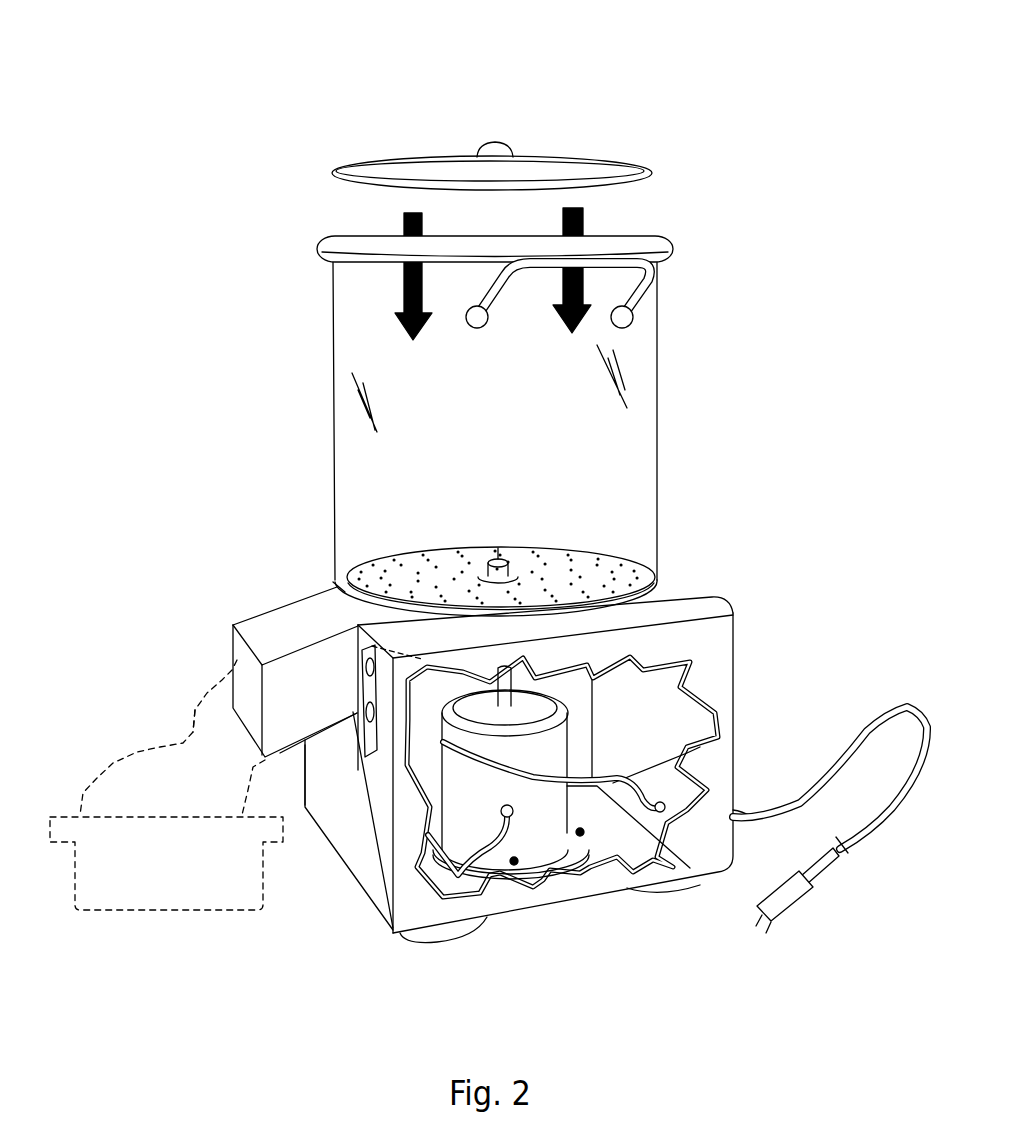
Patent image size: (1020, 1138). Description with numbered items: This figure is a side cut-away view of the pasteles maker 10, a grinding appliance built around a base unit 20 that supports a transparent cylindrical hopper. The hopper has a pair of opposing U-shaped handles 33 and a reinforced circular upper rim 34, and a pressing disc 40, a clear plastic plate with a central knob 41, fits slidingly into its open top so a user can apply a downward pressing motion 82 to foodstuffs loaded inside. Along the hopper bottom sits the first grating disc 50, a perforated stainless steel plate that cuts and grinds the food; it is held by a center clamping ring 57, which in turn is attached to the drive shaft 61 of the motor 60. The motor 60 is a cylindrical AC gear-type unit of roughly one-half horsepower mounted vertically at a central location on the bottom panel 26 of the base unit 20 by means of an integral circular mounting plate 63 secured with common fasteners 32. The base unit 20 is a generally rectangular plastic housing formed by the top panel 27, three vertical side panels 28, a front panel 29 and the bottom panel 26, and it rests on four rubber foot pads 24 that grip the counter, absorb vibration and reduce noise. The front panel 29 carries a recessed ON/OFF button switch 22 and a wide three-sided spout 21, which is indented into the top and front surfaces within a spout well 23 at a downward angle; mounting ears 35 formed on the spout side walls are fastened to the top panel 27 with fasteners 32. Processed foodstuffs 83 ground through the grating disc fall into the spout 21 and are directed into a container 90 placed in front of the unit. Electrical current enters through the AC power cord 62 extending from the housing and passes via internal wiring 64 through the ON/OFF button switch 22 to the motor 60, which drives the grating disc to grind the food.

The pasteles maker 10 is at (852, 143).
The base unit 20 is at (748, 638).
The spout 21 is at (263, 692).
The ON/OFF button switch 22 is at (355, 713).
The spout well 23 is at (353, 715).
The foot pads 24 is at (463, 923).
The bottom panel 26 is at (610, 835).
The top panel 27 is at (682, 610).
The side panel 28 is at (720, 797).
The front panel 29 is at (358, 862).
The fastener 32 is at (515, 860).
The handle 33 is at (652, 273).
The rim 34 is at (647, 248).
The mounting ear 35 is at (427, 623).
The pressing disc 40 is at (602, 160).
The knob 41 is at (494, 148).
The first grating disc 50 is at (640, 562).
The clamping ring 57 is at (512, 560).
The motor 60 is at (460, 808).
The drive shaft 61 is at (580, 688).
The alternating current (AC) power cord 62 is at (828, 860).
The mounting plate 63 is at (543, 857).
The internal wiring 64 is at (450, 878).
The pressing motion 82 is at (420, 340).
The processed foodstuffs 83 is at (208, 783).
The container 90 is at (133, 883).